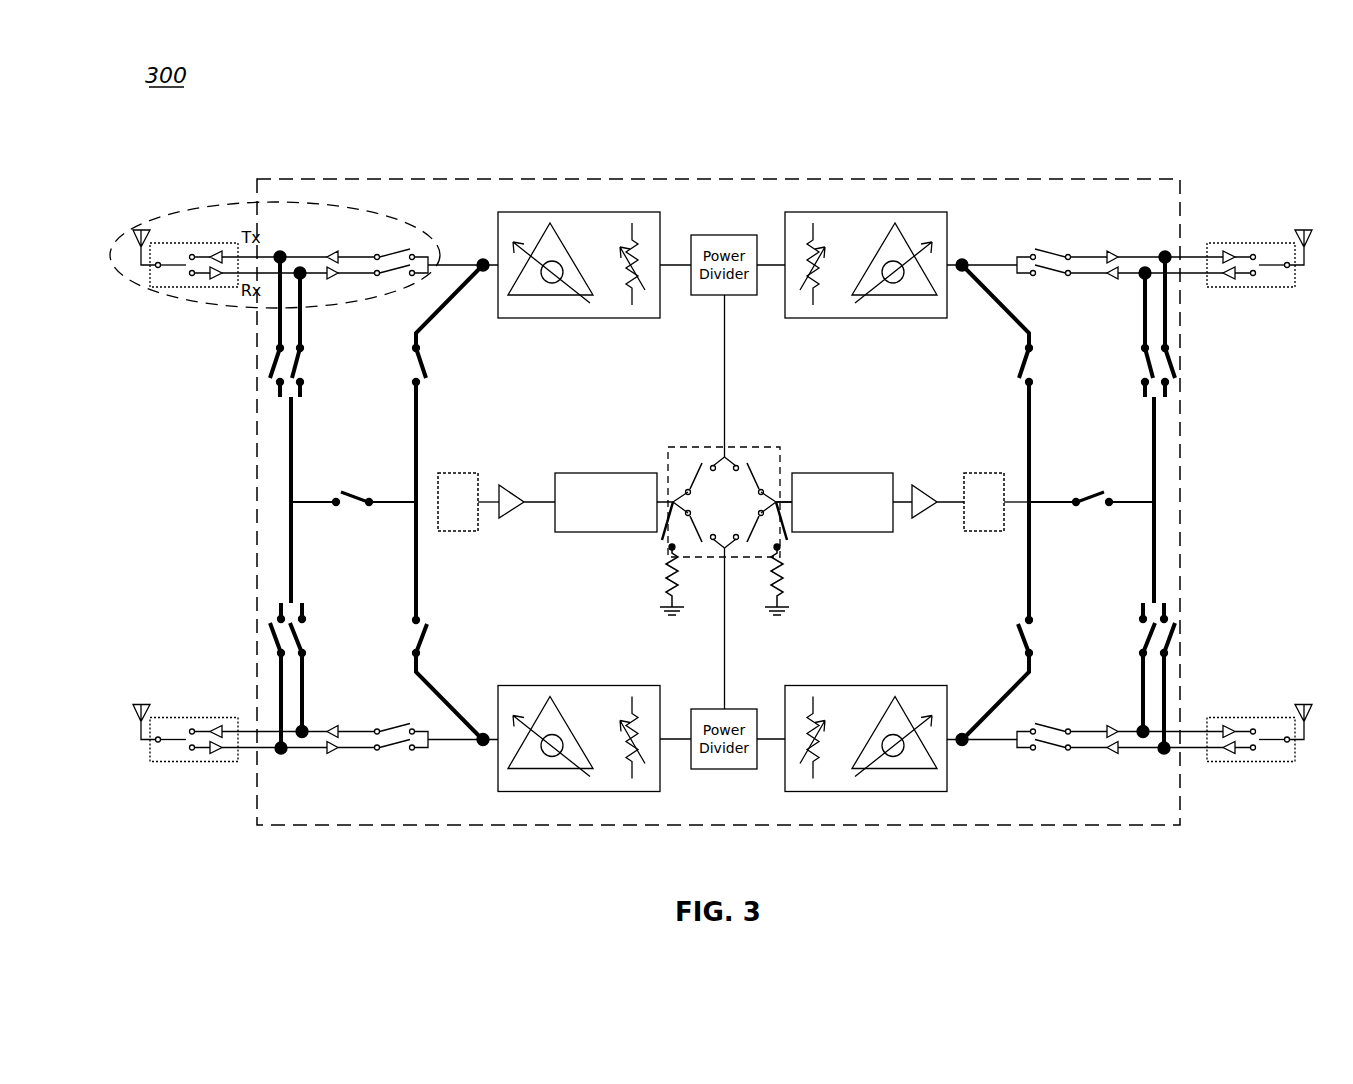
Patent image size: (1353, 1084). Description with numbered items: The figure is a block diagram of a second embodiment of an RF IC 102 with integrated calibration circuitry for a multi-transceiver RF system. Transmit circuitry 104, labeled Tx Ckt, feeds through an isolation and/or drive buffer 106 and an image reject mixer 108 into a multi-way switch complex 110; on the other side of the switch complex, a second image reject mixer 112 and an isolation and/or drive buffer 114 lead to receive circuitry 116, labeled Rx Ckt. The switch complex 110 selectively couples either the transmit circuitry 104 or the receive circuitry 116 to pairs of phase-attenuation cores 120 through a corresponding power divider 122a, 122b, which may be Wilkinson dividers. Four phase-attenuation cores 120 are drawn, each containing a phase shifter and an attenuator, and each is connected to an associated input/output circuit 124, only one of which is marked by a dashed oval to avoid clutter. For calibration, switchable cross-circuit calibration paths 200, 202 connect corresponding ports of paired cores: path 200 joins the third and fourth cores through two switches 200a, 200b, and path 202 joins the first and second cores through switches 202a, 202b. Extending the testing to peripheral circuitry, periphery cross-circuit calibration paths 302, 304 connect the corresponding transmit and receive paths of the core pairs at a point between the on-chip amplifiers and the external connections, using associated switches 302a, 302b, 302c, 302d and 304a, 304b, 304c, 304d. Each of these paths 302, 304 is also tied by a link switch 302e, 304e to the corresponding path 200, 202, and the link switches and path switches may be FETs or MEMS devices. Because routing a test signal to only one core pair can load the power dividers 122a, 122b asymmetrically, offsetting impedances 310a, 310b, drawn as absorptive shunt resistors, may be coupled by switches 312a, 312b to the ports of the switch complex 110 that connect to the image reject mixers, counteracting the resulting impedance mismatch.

The RF IC 102 is at (1133, 178).
The transmit circuitry 104 is at (458, 471).
The isolation and/or drive buffer 106 is at (516, 484).
The image reject mixer 108 is at (580, 472).
The multi-way switch complex 110 is at (782, 446).
The image reject mixer 112 is at (870, 532).
The isolation and/or drive buffer 114 is at (928, 518).
The receive circuitry 116 is at (983, 532).
The phase-attenuation core 120 is at (498, 212).
The power divider 122a is at (728, 235).
The power divider 122b is at (725, 772).
The input/output circuit 124 is at (168, 214).
The cross-circuit calibration path 200 is at (416, 443).
The switch 200a is at (428, 360).
The switch 200b is at (428, 652).
The cross-circuit calibration path 202 is at (1031, 452).
The switch 202a is at (1016, 358).
The switch 202b is at (1017, 644).
The periphery cross-circuit calibration path 302 is at (290, 553).
The switch 302a is at (266, 355).
The switch 302b is at (306, 360).
The switch 302c is at (266, 645).
The switch 302d is at (306, 643).
The link switch 302e is at (361, 514).
The periphery cross-circuit calibration path 304 is at (1155, 553).
The switch 304a is at (1140, 358).
The switch 304b is at (1178, 356).
The switch 304c is at (1140, 640).
The switch 304d is at (1178, 650).
The link switch 304e is at (1080, 516).
The offsetting impedance 310a is at (659, 598).
The offsetting impedance 310b is at (789, 597).
The switch 312a is at (660, 533).
The switch 312b is at (788, 540).